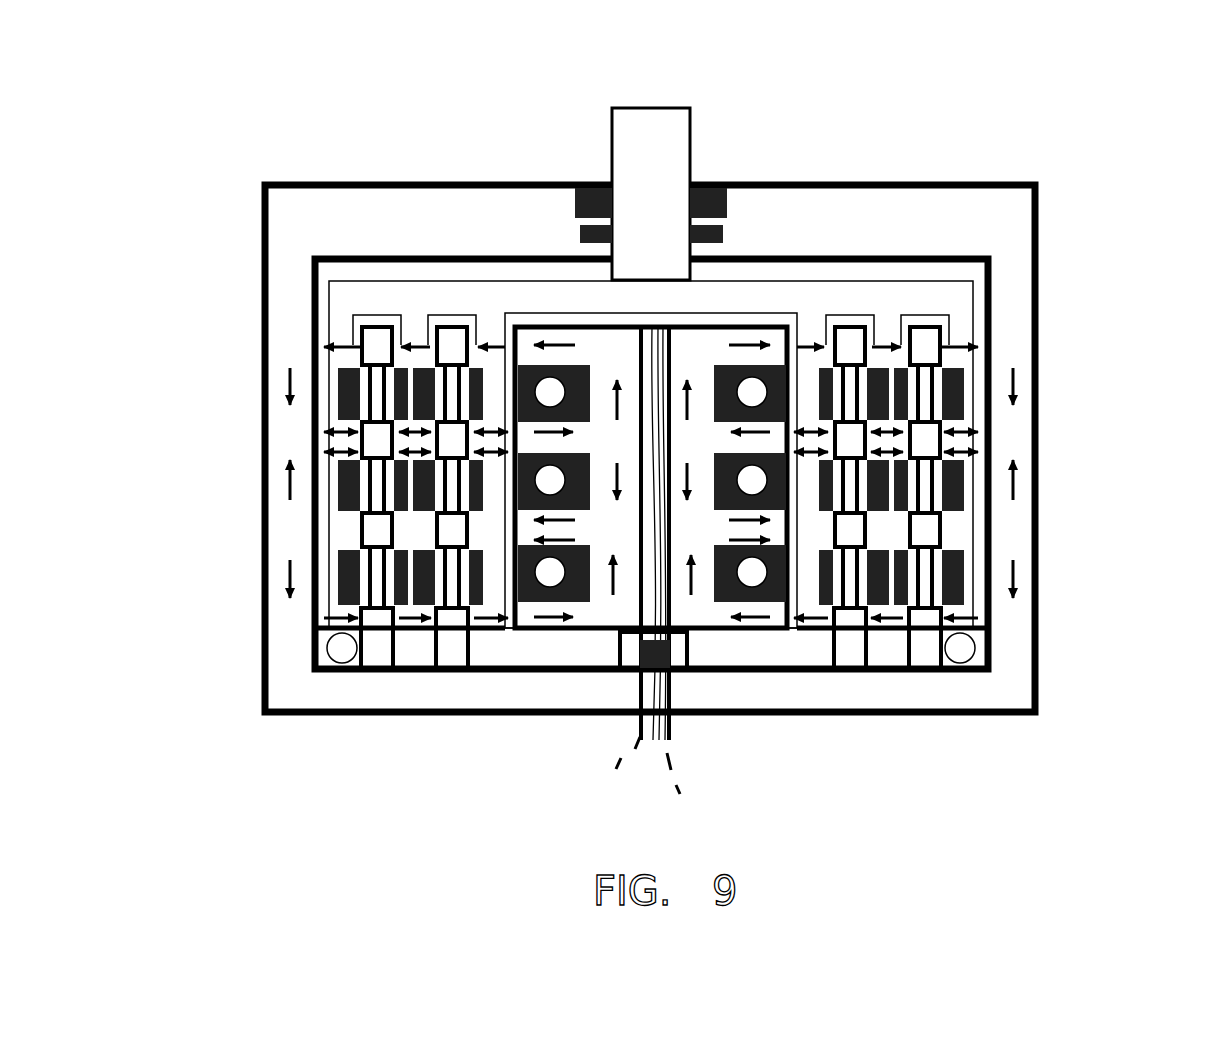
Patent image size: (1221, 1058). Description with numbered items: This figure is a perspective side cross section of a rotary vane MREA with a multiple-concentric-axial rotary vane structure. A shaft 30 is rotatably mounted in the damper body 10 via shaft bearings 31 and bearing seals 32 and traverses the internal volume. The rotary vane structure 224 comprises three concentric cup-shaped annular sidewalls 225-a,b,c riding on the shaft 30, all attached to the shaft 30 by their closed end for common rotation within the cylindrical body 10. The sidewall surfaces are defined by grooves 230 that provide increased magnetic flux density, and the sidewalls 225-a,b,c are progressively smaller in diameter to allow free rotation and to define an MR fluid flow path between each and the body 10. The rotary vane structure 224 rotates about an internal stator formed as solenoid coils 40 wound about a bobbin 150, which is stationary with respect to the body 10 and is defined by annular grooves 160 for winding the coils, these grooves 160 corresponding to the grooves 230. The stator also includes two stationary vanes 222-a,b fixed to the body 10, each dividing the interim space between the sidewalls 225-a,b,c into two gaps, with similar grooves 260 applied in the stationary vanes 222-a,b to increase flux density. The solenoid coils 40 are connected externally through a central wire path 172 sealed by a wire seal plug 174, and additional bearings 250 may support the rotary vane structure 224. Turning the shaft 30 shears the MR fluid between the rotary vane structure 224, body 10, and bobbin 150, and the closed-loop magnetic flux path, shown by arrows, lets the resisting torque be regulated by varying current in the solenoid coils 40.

The damper body 10 is at (468, 215).
The shaft 30 is at (664, 205).
The shaft bearings 31 is at (703, 186).
The bearing seals 32 is at (727, 224).
The rotary vane structure 224 is at (755, 295).
The grooves 230 is at (357, 363).
The grooves 260 is at (382, 523).
The stationary vanes 222-a,b is at (450, 530).
The concentric cup-shaped annular sidewalls 225-a,b,c is at (968, 578).
The annular grooves 160 is at (533, 603).
The bobbin 150 is at (688, 605).
The solenoid coils 40 is at (553, 577).
The central wire path 172 is at (640, 665).
The wire seal plug 174 is at (669, 672).
The additional bearings 250 is at (327, 673).